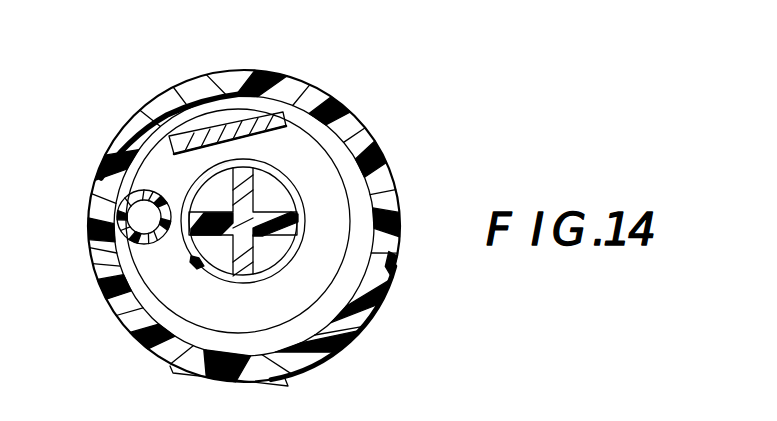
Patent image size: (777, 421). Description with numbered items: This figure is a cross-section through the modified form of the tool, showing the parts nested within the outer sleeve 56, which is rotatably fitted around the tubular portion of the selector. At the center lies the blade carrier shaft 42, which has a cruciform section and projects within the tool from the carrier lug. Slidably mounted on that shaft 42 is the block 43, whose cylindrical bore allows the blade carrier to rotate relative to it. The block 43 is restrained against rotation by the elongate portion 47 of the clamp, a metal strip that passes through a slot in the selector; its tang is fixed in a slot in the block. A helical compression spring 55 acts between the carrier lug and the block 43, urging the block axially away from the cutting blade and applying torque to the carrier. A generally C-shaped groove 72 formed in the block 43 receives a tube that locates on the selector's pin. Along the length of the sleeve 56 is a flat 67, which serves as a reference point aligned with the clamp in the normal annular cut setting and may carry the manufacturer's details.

The shaft 42 is at (281, 222).
The block 43 is at (323, 267).
The elongate portion 47 is at (218, 135).
The helical compression spring 55 is at (196, 188).
The sleeve 56 is at (323, 93).
The flat 67 is at (172, 369).
The C-shaped groove 72 is at (142, 219).